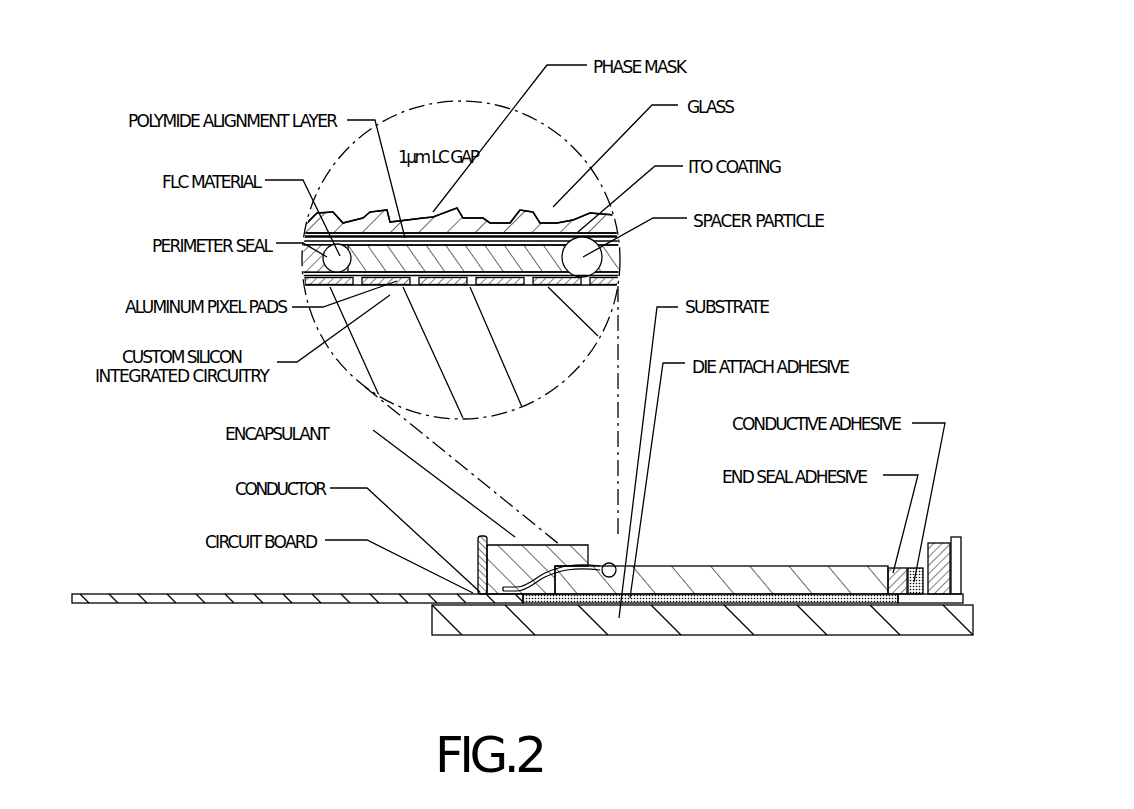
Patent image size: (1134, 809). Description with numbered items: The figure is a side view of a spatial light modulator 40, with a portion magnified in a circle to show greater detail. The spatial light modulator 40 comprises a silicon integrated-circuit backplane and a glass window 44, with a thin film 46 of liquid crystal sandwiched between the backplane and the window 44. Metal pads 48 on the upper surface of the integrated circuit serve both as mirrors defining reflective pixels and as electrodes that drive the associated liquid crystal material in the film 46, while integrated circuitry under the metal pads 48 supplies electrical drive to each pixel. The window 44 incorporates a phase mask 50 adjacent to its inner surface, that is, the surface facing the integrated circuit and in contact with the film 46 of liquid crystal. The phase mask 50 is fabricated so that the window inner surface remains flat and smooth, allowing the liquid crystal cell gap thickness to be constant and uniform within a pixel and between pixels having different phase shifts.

The spatial light modulator 40 is at (403, 617).
The glass window 44 is at (466, 116).
The thin film of liquid crystal 46 is at (372, 272).
The metal pads 48 is at (510, 286).
The phase mask 50 is at (538, 205).